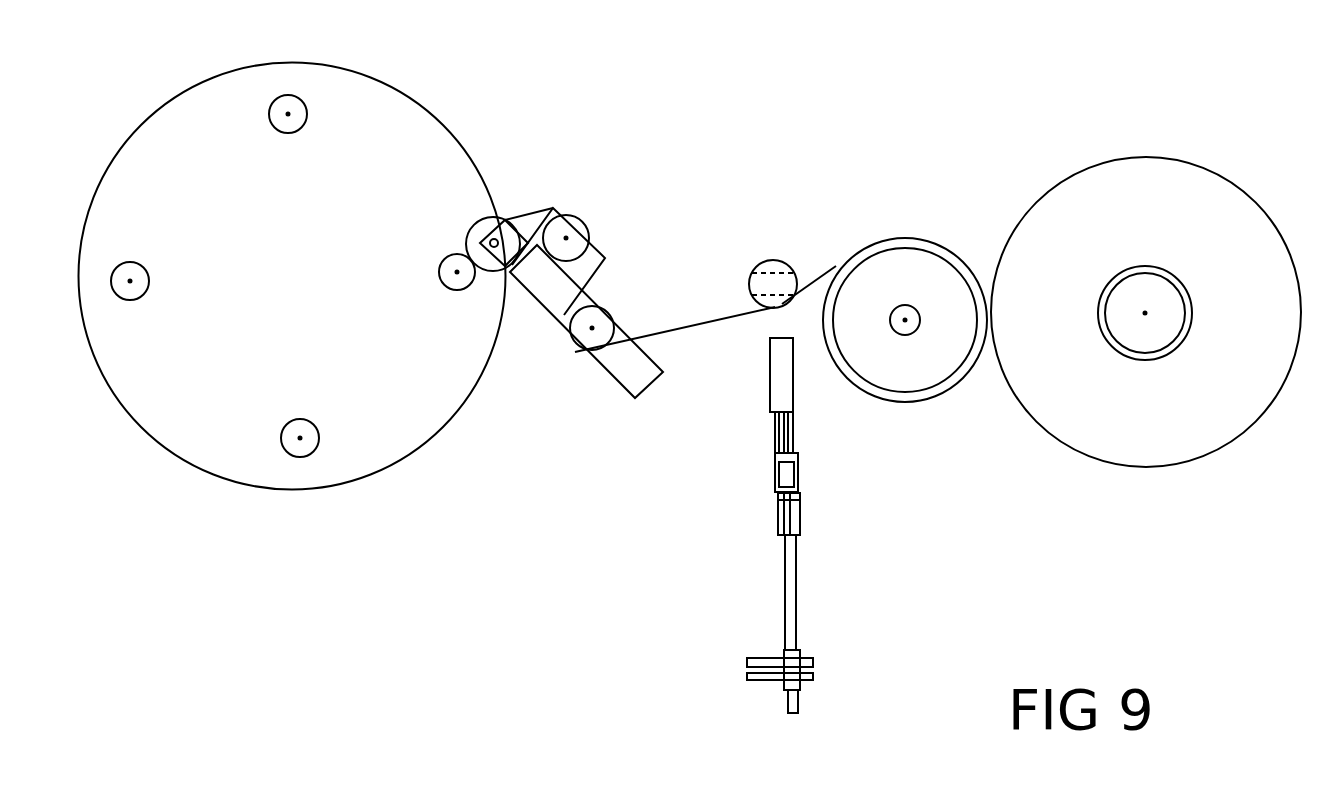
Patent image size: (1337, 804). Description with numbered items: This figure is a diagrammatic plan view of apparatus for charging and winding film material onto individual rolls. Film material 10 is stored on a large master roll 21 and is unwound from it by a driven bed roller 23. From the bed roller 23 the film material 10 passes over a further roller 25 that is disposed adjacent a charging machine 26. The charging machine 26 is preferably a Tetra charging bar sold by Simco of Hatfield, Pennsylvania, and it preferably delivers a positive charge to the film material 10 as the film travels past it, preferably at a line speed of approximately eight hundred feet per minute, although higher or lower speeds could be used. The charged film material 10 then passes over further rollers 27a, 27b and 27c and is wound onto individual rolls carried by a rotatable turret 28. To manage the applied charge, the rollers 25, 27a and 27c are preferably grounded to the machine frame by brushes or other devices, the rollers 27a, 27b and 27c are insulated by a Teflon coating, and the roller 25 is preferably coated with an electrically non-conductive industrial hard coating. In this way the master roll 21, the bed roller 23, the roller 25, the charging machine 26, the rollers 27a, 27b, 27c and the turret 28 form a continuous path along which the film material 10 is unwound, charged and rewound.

The film material 10 is at (815, 284).
The master roll 21 is at (1238, 213).
The driven bed roller 23 is at (905, 258).
The roller 25 is at (748, 275).
The charging machine 26 is at (775, 445).
The roller 27a is at (607, 323).
The roller 27b is at (570, 208).
The roller 27c is at (497, 195).
The rotatable turret 28 is at (447, 157).